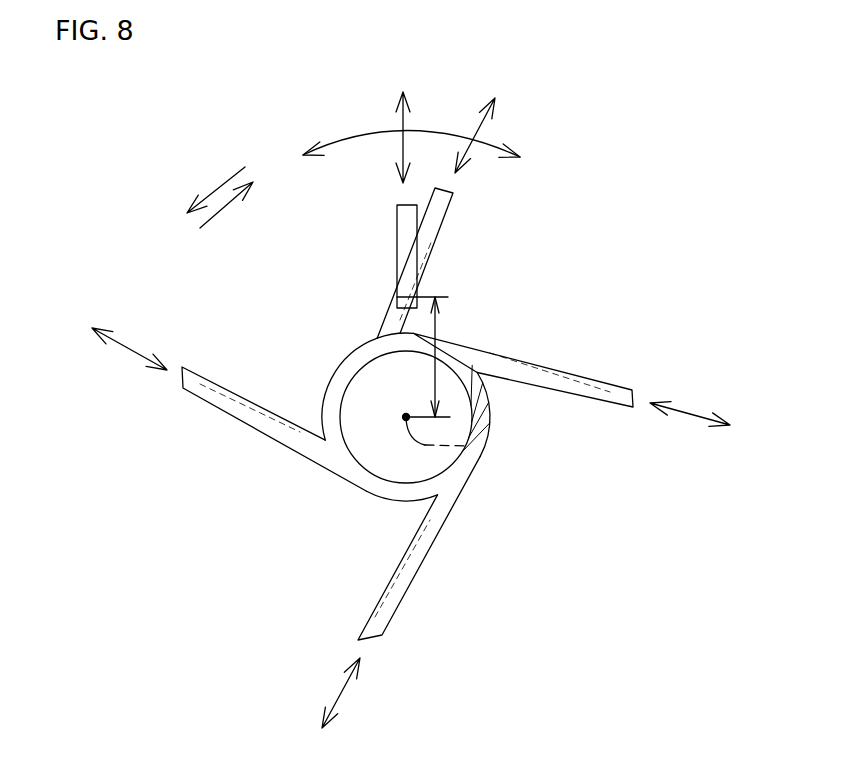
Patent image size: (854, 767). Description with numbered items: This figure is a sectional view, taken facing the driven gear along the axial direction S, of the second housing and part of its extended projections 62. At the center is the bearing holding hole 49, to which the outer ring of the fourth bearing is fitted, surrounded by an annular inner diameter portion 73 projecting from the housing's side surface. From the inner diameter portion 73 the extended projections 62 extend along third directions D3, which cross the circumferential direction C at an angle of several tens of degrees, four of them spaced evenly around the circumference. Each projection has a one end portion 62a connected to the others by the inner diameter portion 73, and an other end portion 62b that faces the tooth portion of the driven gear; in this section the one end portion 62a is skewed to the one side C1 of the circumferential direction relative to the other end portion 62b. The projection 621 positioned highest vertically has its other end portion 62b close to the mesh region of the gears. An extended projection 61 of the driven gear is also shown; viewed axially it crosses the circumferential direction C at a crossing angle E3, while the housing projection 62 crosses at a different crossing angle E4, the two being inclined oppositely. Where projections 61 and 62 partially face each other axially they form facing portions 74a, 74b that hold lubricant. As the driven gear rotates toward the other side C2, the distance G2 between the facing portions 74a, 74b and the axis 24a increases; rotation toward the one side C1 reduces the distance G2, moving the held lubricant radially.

The inner diameter portion 73 is at (343, 373).
The extended projection 62 is at (407, 414).
The extended projection positioned highest 621 is at (392, 288).
The one end portion 62a is at (512, 355).
The other end portion 62b is at (449, 205).
The extended projection 61 is at (395, 215).
The facing portion 74a is at (418, 262).
The facing portion 74b is at (573, 258).
The distance G2 is at (440, 357).
The axial direction S is at (500, 460).
The axis of the driven gear 24a is at (483, 460).
The bearing holding hole 49 is at (478, 405).
The circumferential direction C is at (348, 137).
The one side of the circumferential direction C1 is at (222, 178).
The other side of the circumferential direction C2 is at (220, 205).
The third directions D3 is at (411, 383).
The crossing angle E3 is at (405, 130).
The crossing angle E4 is at (483, 137).